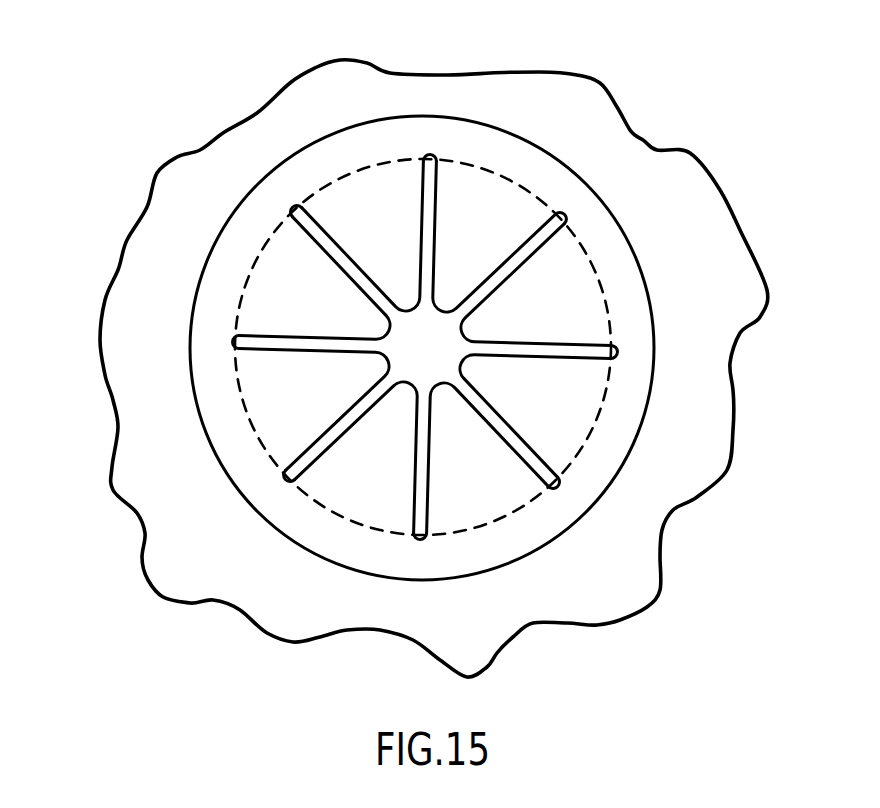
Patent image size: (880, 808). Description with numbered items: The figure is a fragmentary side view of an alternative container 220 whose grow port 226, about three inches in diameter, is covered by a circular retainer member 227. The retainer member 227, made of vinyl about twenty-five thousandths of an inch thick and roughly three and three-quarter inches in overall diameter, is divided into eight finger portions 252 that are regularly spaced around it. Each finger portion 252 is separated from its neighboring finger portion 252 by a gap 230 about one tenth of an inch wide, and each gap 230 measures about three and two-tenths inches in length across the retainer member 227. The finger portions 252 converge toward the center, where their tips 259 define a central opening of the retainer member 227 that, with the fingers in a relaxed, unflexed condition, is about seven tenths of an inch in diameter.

The container 220 is at (622, 155).
The grow port 226 is at (650, 400).
The retainer member 227 is at (565, 510).
The gap 230 is at (295, 213).
The finger portion 252 is at (401, 229).
The tip 259 is at (465, 308).